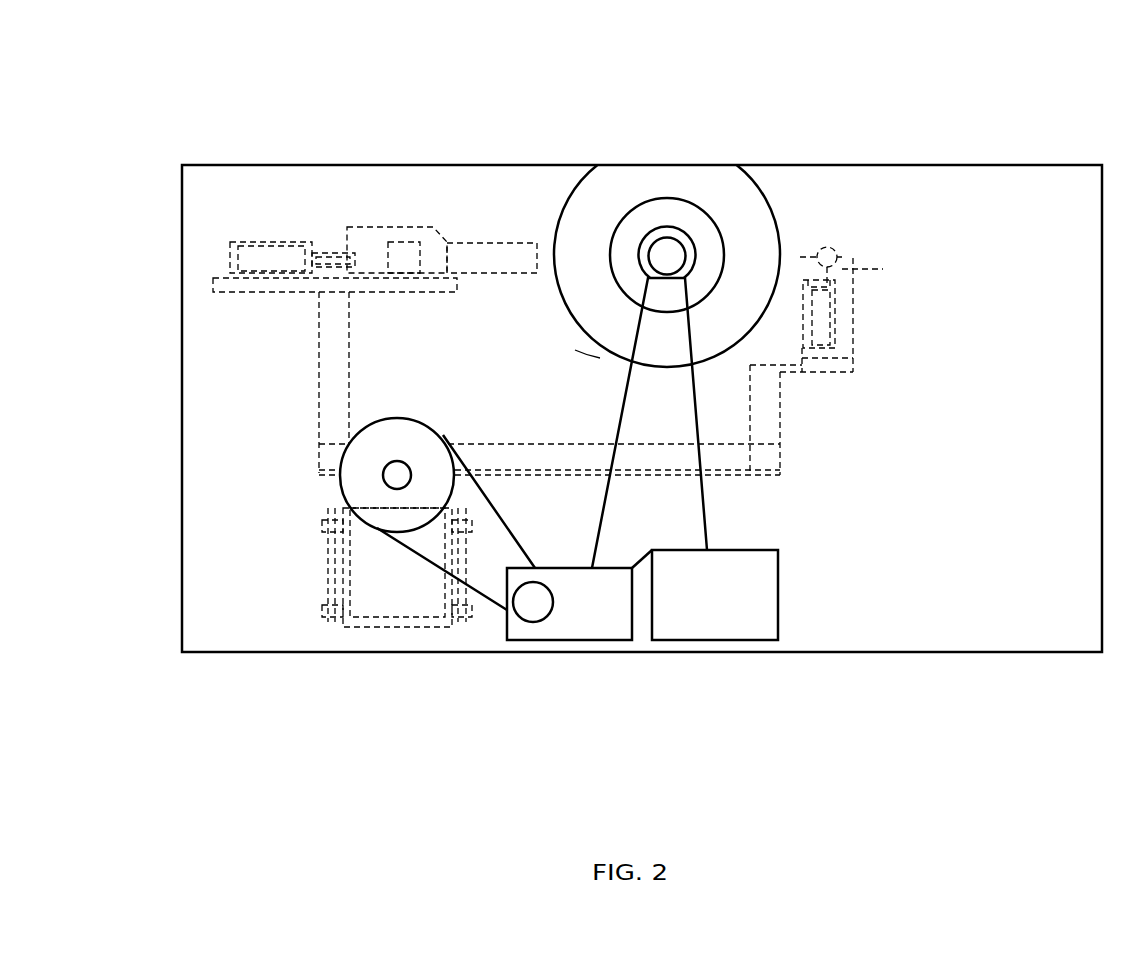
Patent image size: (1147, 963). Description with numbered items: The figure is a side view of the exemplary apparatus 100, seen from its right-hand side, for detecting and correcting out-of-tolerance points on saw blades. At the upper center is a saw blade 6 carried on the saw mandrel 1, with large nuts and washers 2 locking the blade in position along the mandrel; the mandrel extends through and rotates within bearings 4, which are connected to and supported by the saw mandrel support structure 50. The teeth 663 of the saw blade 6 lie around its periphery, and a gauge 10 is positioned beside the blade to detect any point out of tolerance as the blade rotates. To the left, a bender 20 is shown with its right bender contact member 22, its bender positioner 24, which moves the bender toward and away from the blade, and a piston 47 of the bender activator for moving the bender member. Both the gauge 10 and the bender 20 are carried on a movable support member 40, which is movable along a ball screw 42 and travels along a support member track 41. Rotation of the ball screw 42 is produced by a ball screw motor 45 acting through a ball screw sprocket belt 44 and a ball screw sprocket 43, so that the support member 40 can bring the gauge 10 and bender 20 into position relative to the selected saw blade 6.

The apparatus 100 is at (992, 128).
The saw blade 6 is at (572, 188).
The teeth 663 is at (585, 343).
The bearings 4 is at (642, 240).
The large nuts and washers 2 is at (723, 263).
The saw mandrel 1 is at (670, 253).
The saw mandrel support structure 50 is at (633, 377).
The ball screw sprocket belt 44 is at (513, 535).
The ball screw motor 45 is at (710, 625).
The ball screw 42 is at (397, 461).
The ball screw sprocket 43 is at (313, 490).
The movable support member 40 is at (282, 285).
The support member track 41 is at (373, 622).
The bender positioner 24 is at (262, 245).
The bender 20 is at (372, 227).
The piston 47 is at (400, 260).
The right bender contact member 22 is at (480, 260).
The gauge 10 is at (830, 247).